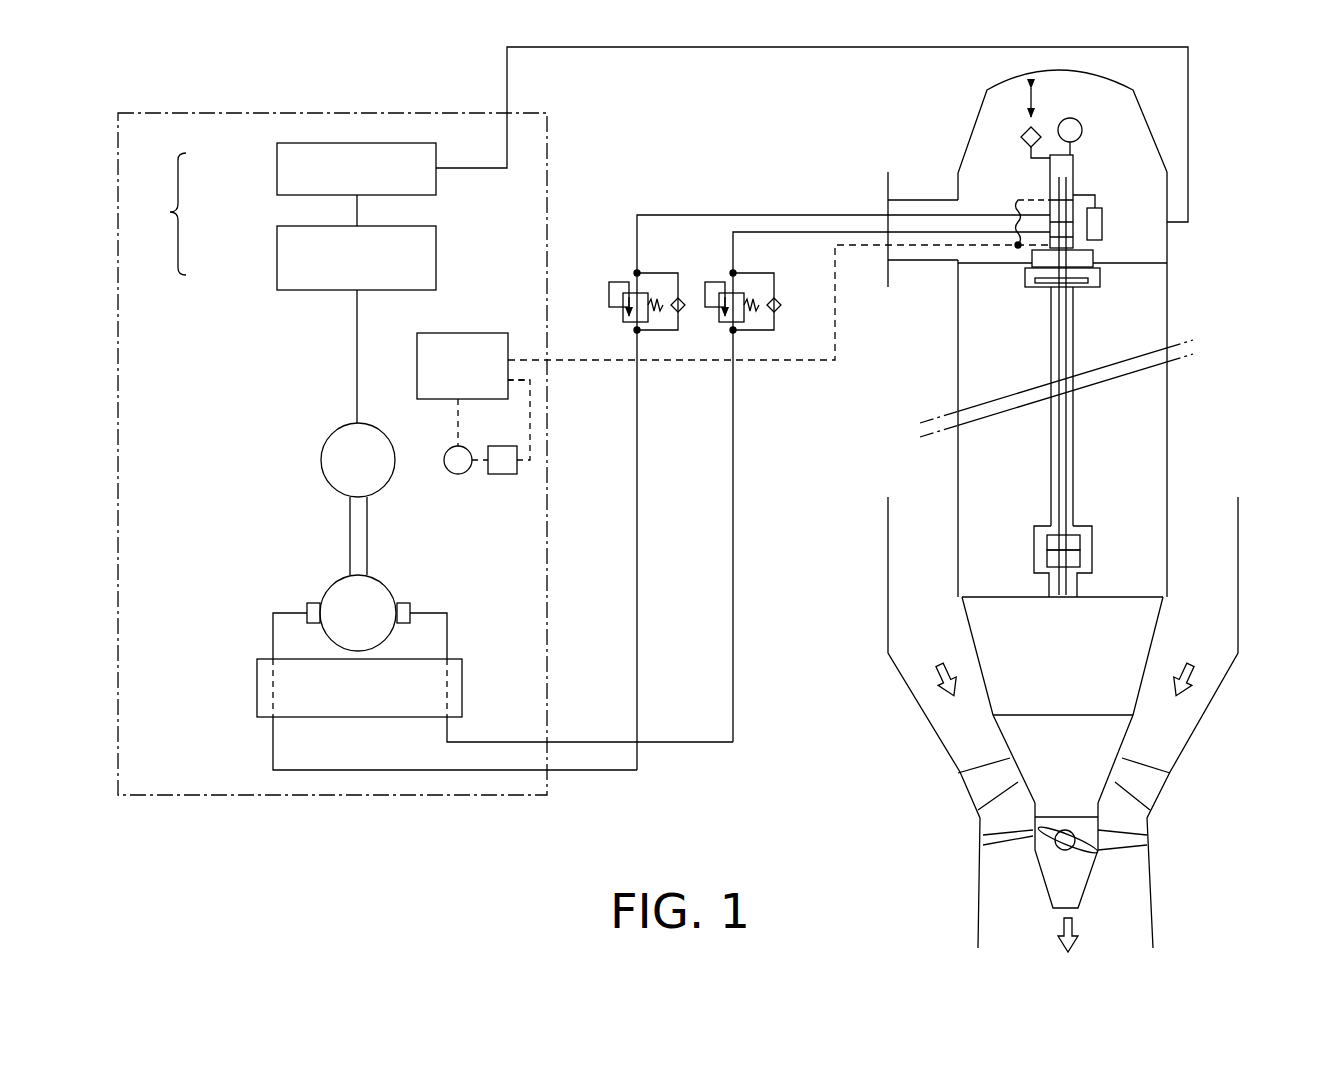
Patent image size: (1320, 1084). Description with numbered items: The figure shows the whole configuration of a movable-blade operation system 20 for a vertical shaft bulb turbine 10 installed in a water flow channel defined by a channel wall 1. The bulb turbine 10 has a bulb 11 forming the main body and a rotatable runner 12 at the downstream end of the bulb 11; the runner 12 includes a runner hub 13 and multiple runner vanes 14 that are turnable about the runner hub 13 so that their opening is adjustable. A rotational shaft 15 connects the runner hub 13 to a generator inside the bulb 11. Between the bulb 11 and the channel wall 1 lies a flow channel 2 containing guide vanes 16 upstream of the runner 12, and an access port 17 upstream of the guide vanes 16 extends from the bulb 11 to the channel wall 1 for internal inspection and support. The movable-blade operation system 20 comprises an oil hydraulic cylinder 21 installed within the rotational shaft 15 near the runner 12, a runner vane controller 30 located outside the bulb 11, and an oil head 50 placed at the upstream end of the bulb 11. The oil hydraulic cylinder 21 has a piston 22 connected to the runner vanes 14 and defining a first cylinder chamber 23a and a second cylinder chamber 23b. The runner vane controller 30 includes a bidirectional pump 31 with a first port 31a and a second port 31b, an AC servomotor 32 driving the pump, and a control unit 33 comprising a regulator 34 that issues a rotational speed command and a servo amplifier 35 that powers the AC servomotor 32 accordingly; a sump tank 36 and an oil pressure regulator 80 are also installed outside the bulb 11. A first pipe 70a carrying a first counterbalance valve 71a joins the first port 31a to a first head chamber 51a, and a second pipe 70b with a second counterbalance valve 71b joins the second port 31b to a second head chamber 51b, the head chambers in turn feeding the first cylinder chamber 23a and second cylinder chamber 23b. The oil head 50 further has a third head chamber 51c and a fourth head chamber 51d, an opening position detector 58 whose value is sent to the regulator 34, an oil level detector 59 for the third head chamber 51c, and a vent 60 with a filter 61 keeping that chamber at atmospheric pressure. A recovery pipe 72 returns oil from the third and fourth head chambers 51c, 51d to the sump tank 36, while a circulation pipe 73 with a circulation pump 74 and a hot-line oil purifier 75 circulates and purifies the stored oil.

The channel wall 1 is at (890, 185).
The flow channel 2 is at (912, 601).
The bulb turbine 10 is at (1195, 468).
The bulb 11 is at (1167, 388).
The runner 12 is at (1098, 895).
The runner hub 13 is at (1046, 868).
The runner vanes 14 is at (1005, 841).
The rotational shaft 15 is at (1073, 428).
The guide vanes 16 is at (980, 787).
The access port 17 is at (920, 262).
The movable-blade operation system 20 is at (470, 85).
The oil hydraulic cylinder 21 is at (1085, 540).
The piston 22 is at (1075, 553).
The first cylinder chamber 23a is at (1050, 540).
The second cylinder chamber 23b is at (1050, 556).
The runner vane controller 30 is at (178, 110).
The bidirectional pump 31 is at (381, 582).
The first port 31a is at (312, 603).
The second port 31b is at (405, 603).
The AC servomotor 32 is at (321, 460).
The control unit 33 is at (158, 214).
The regulator 34 is at (277, 170).
The servo amplifier 35 is at (277, 262).
The sump tank 36 is at (460, 333).
The oil head 50 is at (1098, 140).
The first head chamber 51a is at (1072, 212).
The second head chamber 51b is at (1077, 228).
The third head chamber 51c is at (1050, 175).
The fourth head chamber 51d is at (1077, 243).
The opening position detector 58 is at (1102, 215).
The oil level detector 59 is at (1082, 125).
The vent 60 is at (1038, 104).
The filter 61 is at (1020, 137).
The first pipe 70a is at (700, 215).
The second pipe 70b is at (733, 515).
The first counterbalance valve 71a is at (600, 297).
The second counterbalance valve 71b is at (783, 297).
The recovery pipe 72 is at (780, 362).
The circulation pipe 73 is at (538, 420).
The circulation pump 74 is at (444, 456).
The hot-line oil purifier 75 is at (505, 475).
The oil pressure regulator 80 is at (257, 692).